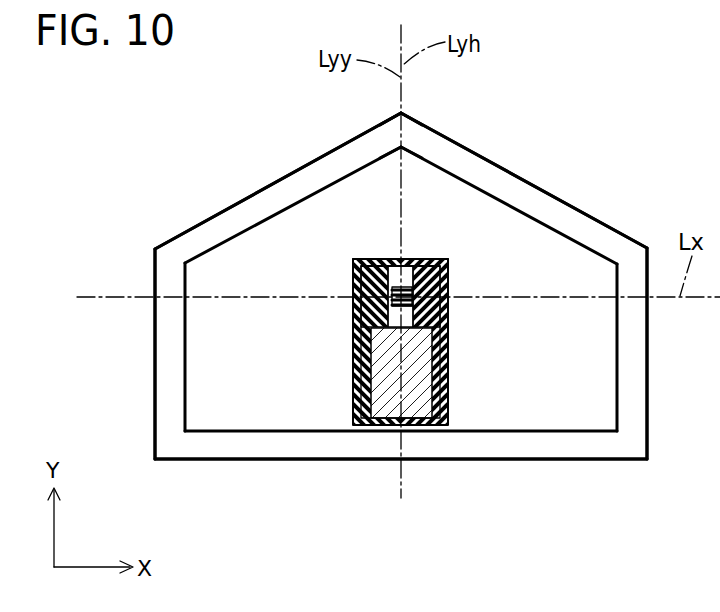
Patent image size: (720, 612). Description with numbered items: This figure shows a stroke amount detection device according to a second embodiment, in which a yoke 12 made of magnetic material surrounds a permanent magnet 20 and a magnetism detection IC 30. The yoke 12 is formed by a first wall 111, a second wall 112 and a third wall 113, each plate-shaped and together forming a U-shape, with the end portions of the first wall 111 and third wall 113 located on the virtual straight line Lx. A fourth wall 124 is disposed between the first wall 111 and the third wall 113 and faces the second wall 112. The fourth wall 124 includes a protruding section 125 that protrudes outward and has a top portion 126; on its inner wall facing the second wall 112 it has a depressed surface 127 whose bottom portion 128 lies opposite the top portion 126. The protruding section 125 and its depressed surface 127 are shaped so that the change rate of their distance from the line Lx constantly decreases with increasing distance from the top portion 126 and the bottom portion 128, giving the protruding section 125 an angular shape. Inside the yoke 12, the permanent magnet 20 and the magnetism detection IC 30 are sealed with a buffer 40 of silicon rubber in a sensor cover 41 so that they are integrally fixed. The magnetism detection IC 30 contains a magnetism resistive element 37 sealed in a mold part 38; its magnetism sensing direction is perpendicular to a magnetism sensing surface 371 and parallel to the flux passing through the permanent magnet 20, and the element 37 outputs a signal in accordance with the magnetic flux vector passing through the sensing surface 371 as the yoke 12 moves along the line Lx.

The yoke 12 is at (648, 459).
The first wall 111 is at (162, 375).
The second wall 112 is at (475, 455).
The third wall 113 is at (640, 406).
The fourth wall 124 is at (201, 242).
The protruding section 125 is at (505, 189).
The top portion 126 is at (404, 132).
The depressed surface 127 is at (517, 213).
The bottom portion 128 is at (410, 161).
The permanent magnet 20 is at (362, 390).
The magnetism detection IC 30 is at (408, 270).
The magnetism resistive element 37 is at (432, 318).
The magnetism sensing surface 371 is at (407, 290).
The mold part 38 is at (372, 320).
The buffer 40 is at (366, 291).
The sensor cover 41 is at (362, 262).